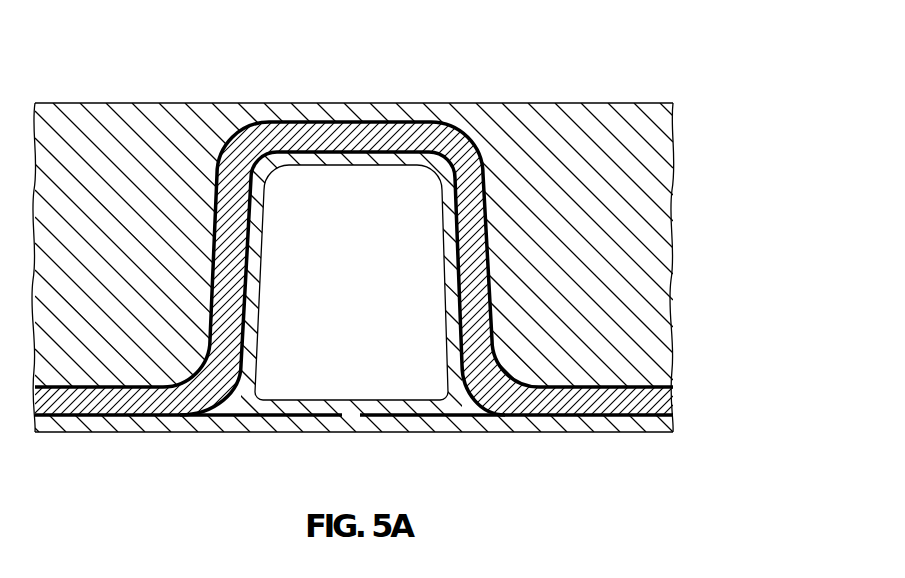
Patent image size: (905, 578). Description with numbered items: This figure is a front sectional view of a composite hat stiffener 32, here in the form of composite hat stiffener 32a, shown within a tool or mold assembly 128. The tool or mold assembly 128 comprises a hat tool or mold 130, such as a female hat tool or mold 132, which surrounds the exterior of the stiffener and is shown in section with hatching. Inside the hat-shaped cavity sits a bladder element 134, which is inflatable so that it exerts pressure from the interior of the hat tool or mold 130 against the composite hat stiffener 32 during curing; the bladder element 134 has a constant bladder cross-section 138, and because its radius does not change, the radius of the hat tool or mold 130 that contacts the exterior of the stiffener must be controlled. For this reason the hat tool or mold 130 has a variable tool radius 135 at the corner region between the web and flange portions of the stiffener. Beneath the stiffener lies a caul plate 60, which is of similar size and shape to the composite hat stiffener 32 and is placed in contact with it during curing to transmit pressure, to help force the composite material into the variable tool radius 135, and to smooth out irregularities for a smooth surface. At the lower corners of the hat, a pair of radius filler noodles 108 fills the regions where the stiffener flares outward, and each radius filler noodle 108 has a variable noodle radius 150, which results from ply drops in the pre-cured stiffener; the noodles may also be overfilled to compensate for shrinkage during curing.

The tool or mold assembly 128 is at (396, 256).
The composite hat stiffener 32 is at (354, 269).
The composite hat stiffener 32a is at (288, 121).
The bladder element 134 is at (345, 151).
The variable tool radius 135 is at (466, 145).
The hat tool or mold 130 is at (396, 267).
The female hat tool or mold 132 is at (648, 212).
The constant bladder cross-section 138 is at (248, 309).
The variable noodle radius 150 is at (213, 410).
The radius filler noodle 108 is at (233, 410).
The caul plate 60 is at (417, 423).